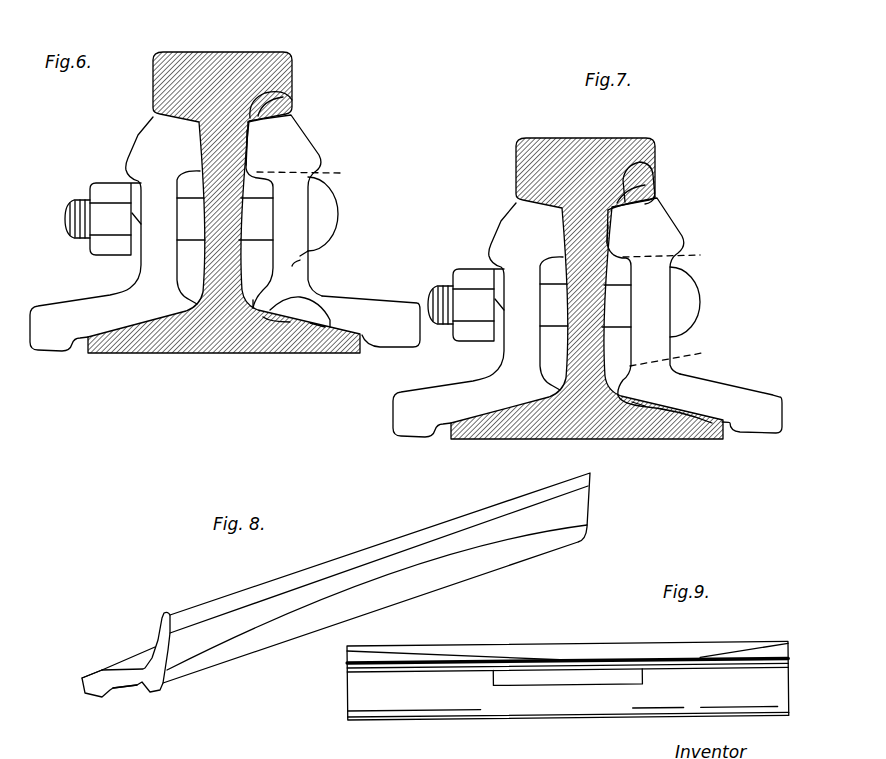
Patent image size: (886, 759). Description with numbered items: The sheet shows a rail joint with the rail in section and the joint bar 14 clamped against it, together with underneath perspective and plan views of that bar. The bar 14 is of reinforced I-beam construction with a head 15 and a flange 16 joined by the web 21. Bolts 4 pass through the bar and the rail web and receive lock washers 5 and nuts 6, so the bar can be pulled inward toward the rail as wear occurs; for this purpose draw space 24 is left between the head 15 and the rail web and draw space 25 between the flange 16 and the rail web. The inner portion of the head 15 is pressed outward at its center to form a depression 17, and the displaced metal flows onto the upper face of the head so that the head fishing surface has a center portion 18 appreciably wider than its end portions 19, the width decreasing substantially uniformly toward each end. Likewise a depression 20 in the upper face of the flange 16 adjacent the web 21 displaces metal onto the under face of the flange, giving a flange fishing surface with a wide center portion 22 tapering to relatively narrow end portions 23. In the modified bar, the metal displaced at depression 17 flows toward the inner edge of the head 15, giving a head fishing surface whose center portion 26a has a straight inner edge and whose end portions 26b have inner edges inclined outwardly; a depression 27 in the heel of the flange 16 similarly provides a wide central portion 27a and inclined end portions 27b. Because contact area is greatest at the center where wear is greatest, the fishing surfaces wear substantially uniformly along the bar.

In FIG. 6, the bolt 4 is at (330, 212).
In FIG. 7, the bolt 4 is at (692, 298).
In FIG. 6, the lock washer 5 is at (133, 255).
In FIG. 7, the lock washer 5 is at (500, 340).
In FIG. 6, the nut 6 is at (103, 183).
In FIG. 7, the nut 6 is at (473, 270).
In FIG. 6, the bar 14 is at (317, 255).
In FIG. 6, the head 15 is at (291, 157).
In FIG. 7, the head 15 is at (653, 235).
In FIG. 8, the head 15 is at (92, 678).
In FIG. 9, the head 15 is at (347, 666).
In FIG. 6, the flange 16 is at (330, 303).
In FIG. 7, the flange 16 is at (717, 397).
In FIG. 8, the flange 16 is at (163, 640).
In FIG. 9, the flange 16 is at (357, 698).
In FIG. 6, the depression 17 is at (310, 172).
In FIG. 7, the depression 17 is at (674, 255).
In FIG. 6, the center portion of head fishing surface 18 is at (293, 97).
In FIG. 9, the center portion of head fishing surface 18 is at (570, 657).
In FIG. 6, the end portions of head fishing surface 19 is at (265, 103).
In FIG. 9, the end portions of head fishing surface 19 is at (370, 652).
In FIG. 6, the depression 20 is at (330, 291).
In FIG. 9, the depression 20 is at (563, 680).
In FIG. 6, the web 21 is at (300, 260).
In FIG. 8, the web 21 is at (132, 678).
In FIG. 6, the center portion of flange fishing surface 22 is at (325, 327).
In FIG. 8, the center portion of flange fishing surface 22 is at (382, 577).
In FIG. 6, the end portions of flange fishing surface 23 is at (290, 320).
In FIG. 8, the end portions of flange fishing surface 23 is at (560, 543).
In FIG. 6, the draw space 24 is at (246, 150).
In FIG. 7, the draw space 24 is at (609, 238).
In FIG. 6, the draw space 25 is at (250, 300).
In FIG. 7, the draw space 25 is at (587, 427).
In FIG. 7, the center portion of head fishing surface 26a is at (648, 205).
In FIG. 7, the end portions of head fishing surface 26b is at (653, 182).
In FIG. 7, the depression 27 is at (680, 354).
In FIG. 7, the central portion of flange fishing surface 27a is at (668, 405).
In FIG. 7, the end portions of flange fishing surface 27b is at (668, 404).